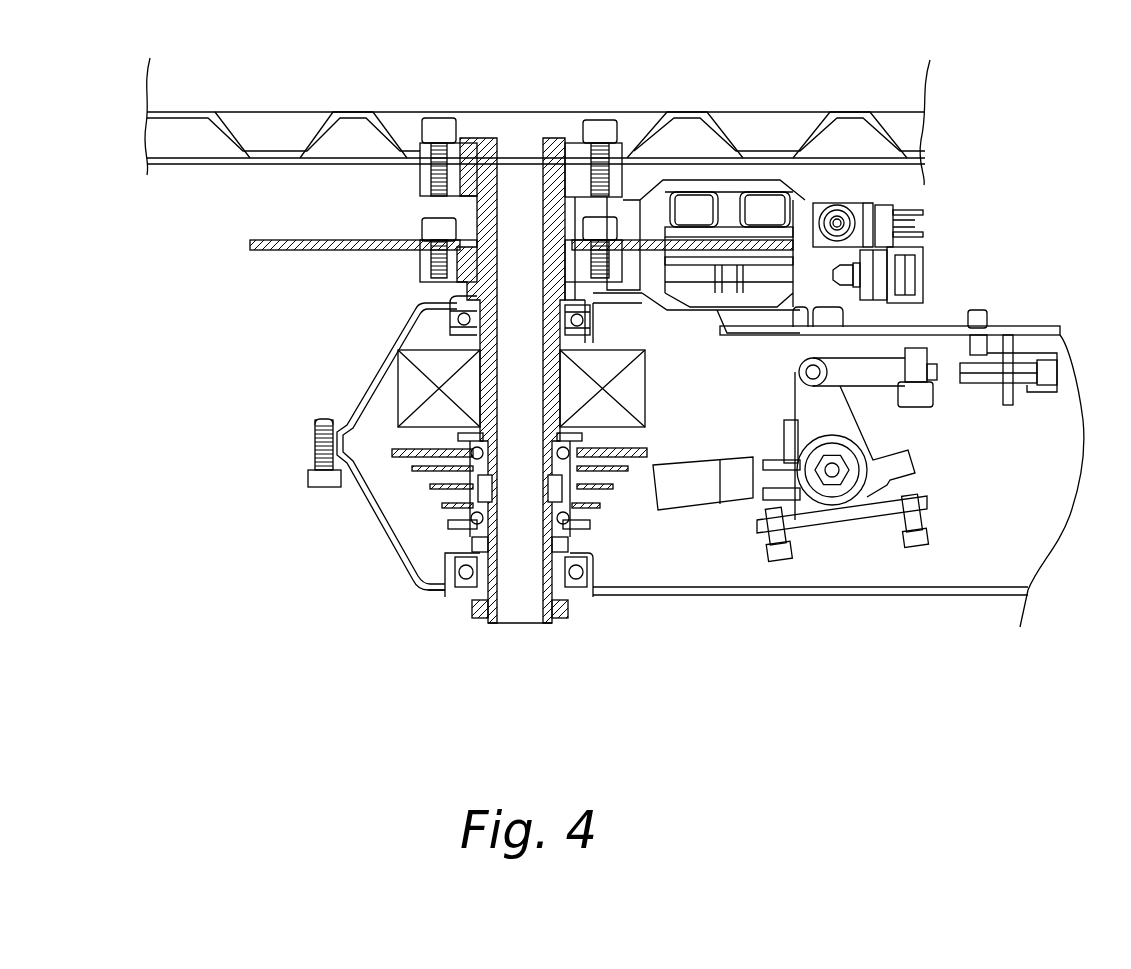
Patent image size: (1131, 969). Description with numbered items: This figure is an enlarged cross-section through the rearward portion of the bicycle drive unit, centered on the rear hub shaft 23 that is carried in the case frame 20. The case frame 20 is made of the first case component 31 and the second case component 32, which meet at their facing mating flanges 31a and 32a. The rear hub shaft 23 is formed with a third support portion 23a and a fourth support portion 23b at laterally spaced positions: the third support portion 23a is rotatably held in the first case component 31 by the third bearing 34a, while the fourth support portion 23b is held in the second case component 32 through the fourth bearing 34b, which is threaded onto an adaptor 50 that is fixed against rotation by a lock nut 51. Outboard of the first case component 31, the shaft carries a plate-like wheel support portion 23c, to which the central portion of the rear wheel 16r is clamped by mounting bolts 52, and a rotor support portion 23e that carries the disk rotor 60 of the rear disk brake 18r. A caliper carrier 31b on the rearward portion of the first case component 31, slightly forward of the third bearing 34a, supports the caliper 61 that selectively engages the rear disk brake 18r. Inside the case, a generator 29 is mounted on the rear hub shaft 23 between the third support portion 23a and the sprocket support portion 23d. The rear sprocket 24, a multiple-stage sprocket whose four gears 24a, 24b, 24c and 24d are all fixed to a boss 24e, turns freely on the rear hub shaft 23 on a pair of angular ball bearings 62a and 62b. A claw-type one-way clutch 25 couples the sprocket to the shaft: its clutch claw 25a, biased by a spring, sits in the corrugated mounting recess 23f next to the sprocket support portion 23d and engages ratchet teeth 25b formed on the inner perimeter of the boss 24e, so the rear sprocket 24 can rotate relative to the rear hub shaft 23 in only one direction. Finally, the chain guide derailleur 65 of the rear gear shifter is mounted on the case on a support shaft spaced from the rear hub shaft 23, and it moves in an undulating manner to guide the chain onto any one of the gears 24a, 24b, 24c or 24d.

The rear wheel 16r is at (310, 120).
The rear hub shaft 23 is at (558, 125).
The third support portion 23a is at (583, 325).
The fourth support portion 23b is at (612, 598).
The wheel support portion 23c is at (460, 173).
The sprocket support portion 23d is at (405, 512).
The rotor support portion 23e is at (425, 260).
The mounting recess 23f is at (590, 525).
The rear sprocket 24 is at (440, 478).
The sprocket gear 24a is at (605, 449).
The sprocket gear 24b is at (660, 462).
The sprocket gear 24c is at (590, 487).
The sprocket gear 24d is at (590, 505).
The boss 24e is at (585, 437).
The one-way clutch 25 is at (445, 562).
The clutch claw 25a is at (476, 505).
The ratchet teeth 25b is at (548, 482).
The generator 29 is at (398, 380).
The first case component 31 is at (1043, 325).
The mating flange 31a is at (308, 448).
The caliper carrier 31b is at (840, 318).
The second case component 32 is at (968, 597).
The mating flange 32a is at (306, 462).
The third bearing 34a is at (452, 308).
The fourth bearing 34b is at (593, 597).
The adaptor 50 is at (474, 615).
The lock nut 51 is at (562, 605).
The mounting bolts 52 is at (607, 127).
The disk rotor 60 is at (292, 242).
The caliper 61 is at (915, 258).
The bearing 62a is at (455, 437).
The bearing 62b is at (468, 605).
The chain guide derailleur 65 is at (820, 522).
The rear disk brake 18r is at (930, 206).
The case frame 20 is at (1043, 290).